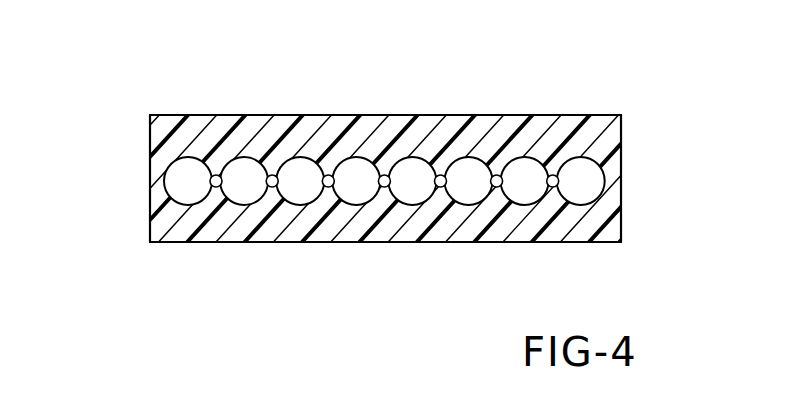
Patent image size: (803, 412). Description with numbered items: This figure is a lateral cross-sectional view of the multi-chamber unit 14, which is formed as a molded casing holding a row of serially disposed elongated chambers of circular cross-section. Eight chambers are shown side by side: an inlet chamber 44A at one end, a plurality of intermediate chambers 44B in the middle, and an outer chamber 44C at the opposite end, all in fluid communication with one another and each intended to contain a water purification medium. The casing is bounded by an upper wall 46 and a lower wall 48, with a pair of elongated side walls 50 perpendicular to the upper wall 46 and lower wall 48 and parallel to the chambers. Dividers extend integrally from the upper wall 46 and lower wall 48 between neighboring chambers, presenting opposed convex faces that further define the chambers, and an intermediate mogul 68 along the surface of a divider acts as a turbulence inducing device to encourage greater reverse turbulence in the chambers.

The multi-chamber unit 14 is at (389, 177).
The inlet chamber 44A is at (174, 192).
The intermediate chambers 44B is at (230, 192).
The outer chamber 44C is at (566, 192).
The upper wall 46 is at (352, 115).
The lower wall 48 is at (303, 243).
The elongated side walls 50 is at (150, 172).
The intermediate moguls 68 is at (444, 188).